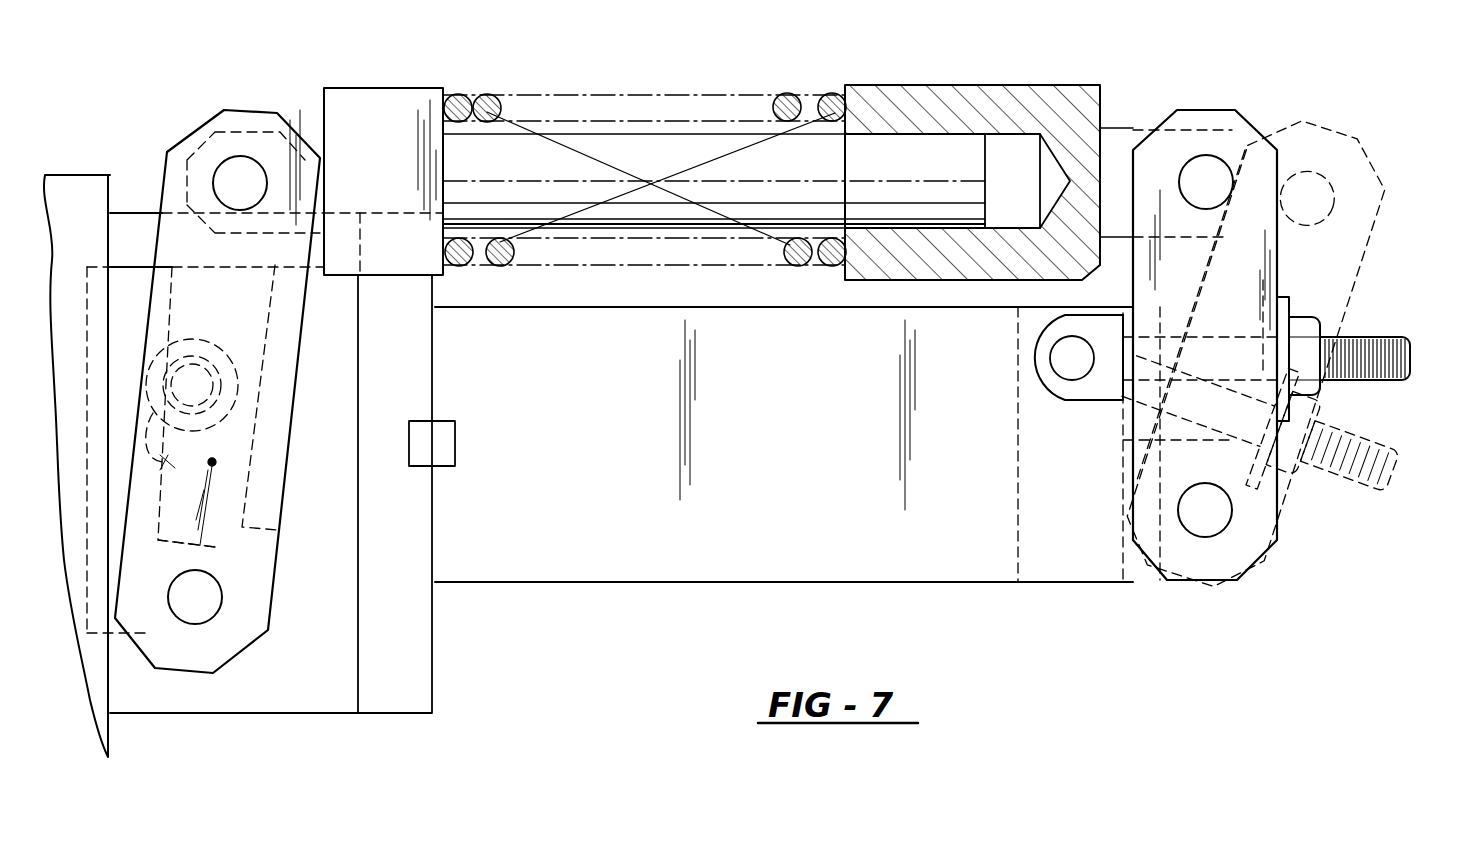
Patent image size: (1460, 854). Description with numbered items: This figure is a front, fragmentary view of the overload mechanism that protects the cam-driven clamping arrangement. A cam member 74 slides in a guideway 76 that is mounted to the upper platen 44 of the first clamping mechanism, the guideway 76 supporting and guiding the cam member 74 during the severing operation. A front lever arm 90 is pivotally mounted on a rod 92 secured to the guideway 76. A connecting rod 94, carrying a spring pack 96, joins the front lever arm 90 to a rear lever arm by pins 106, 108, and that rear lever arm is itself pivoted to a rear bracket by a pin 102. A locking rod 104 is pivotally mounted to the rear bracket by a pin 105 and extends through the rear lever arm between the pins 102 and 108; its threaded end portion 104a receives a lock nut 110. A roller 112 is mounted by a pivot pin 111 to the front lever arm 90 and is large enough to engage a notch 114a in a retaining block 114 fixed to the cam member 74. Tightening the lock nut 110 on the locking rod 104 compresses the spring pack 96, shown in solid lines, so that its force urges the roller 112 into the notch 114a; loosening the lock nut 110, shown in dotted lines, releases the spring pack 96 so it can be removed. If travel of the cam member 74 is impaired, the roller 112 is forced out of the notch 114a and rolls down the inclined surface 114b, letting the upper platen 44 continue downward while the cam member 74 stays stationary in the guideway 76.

The upper platen 44 is at (808, 565).
The cam member 74 is at (88, 185).
The guideway 76 is at (415, 686).
The front lever arm 90 is at (268, 572).
The rod 92 is at (205, 600).
The connecting rod 94 is at (835, 165).
The spring pack 96 is at (772, 100).
The pin 102 is at (1200, 522).
The locking rod 104 is at (1275, 406).
The threaded end portion 104a is at (1366, 335).
The pin 105 is at (1065, 358).
The pin 106 is at (245, 182).
The pin 108 is at (1200, 168).
The lock nut 110 is at (1300, 322).
The pivot pin 111 is at (205, 395).
The roller 112 is at (194, 345).
The retaining block 114 is at (132, 278).
The notch 114a is at (199, 497).
The inclined surface 114b is at (208, 547).